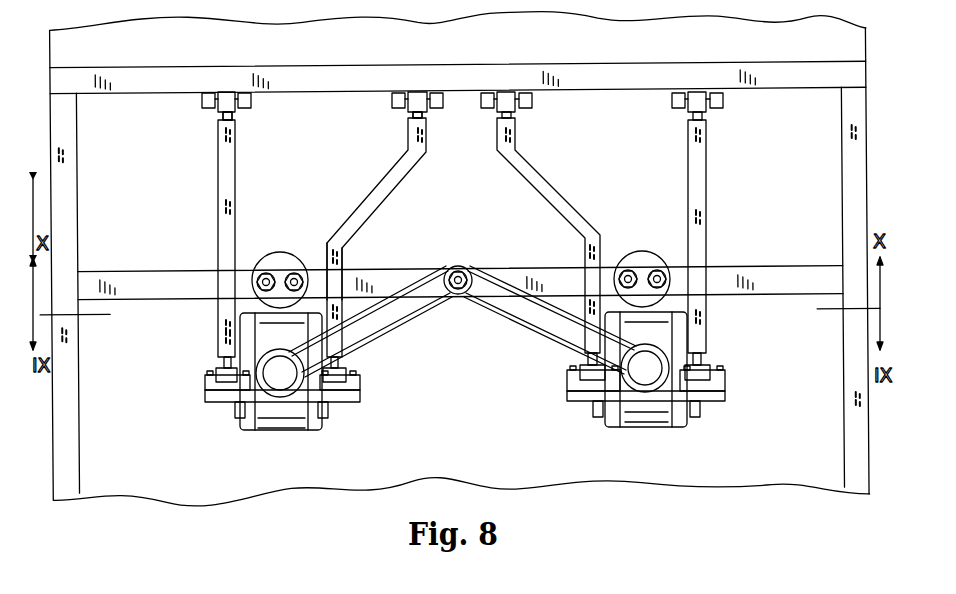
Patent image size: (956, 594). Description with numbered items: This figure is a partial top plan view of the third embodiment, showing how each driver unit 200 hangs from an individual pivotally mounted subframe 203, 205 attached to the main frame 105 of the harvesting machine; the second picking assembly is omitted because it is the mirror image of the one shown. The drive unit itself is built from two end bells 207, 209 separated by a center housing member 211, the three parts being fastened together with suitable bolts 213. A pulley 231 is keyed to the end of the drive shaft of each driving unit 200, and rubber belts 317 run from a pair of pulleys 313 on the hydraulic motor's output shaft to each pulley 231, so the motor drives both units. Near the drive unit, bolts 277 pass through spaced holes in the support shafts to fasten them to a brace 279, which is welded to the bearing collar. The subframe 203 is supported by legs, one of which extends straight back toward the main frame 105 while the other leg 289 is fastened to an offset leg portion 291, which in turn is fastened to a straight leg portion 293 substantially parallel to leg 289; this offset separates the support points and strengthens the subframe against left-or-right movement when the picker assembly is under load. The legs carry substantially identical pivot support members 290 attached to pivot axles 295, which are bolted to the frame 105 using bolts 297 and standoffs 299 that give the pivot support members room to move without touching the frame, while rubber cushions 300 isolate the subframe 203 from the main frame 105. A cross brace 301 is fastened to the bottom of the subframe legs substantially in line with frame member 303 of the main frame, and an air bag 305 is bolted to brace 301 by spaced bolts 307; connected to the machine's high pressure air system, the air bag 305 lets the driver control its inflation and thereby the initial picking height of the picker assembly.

The main frame 105 is at (143, 73).
The driver unit 200 is at (449, 391).
The subframe 203 is at (240, 188).
The subframe 205 is at (540, 166).
The end bell 207 is at (239, 424).
The end bell 209 is at (317, 426).
The center housing member 211 is at (276, 422).
The bolts 213 is at (328, 422).
The pulley 231 is at (216, 398).
The bolts 277 is at (212, 378).
The brace 279 is at (210, 404).
The leg 289 is at (340, 242).
The pivot support member 290 is at (221, 118).
The offset leg portion 291 is at (385, 190).
The straight leg portion 293 is at (415, 133).
The pivot axle 295 is at (249, 101).
The bolts 297 is at (213, 107).
The standoffs 299 is at (203, 98).
The rubber cushion 300 is at (218, 95).
The cross brace 301 is at (243, 265).
The frame member 303 is at (179, 277).
The air bag 305 is at (250, 309).
The bolts 307 is at (276, 275).
The pulleys 313 is at (465, 273).
The rubber belts 317 is at (508, 318).